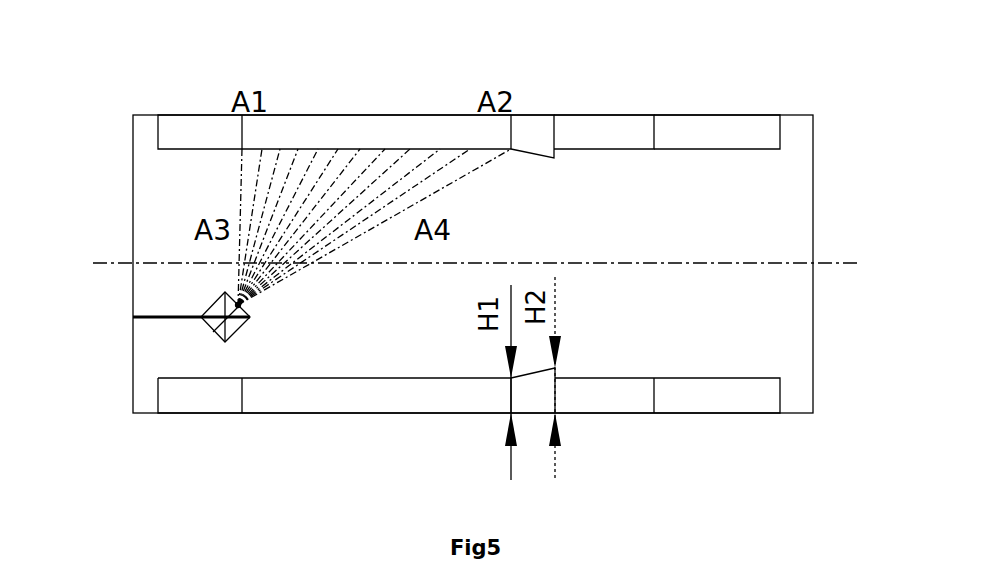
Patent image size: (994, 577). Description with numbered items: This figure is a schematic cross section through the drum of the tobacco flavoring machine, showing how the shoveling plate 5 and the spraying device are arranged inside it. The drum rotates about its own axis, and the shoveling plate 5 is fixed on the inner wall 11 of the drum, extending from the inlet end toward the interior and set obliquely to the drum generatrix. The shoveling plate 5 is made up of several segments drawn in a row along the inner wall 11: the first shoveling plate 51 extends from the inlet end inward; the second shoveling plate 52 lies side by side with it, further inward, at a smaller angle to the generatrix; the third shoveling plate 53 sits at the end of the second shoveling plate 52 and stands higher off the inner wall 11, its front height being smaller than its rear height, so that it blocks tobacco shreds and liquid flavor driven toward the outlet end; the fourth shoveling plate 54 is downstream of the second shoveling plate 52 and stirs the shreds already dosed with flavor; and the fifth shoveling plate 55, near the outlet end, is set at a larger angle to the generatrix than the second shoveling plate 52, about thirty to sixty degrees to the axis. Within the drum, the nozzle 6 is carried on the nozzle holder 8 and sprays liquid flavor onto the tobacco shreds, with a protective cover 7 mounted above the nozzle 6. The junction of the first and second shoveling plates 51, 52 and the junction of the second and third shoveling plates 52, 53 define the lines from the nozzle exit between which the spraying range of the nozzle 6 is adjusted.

The shoveling plate 5 is at (520, 362).
The nozzle 6 is at (312, 396).
The protective cover 7 is at (211, 390).
The nozzle holder 8 is at (144, 401).
The inner wall 11 is at (520, 264).
The first shoveling plate 51 is at (219, 74).
The second shoveling plate 52 is at (376, 74).
The third shoveling plate 53 is at (571, 79).
The fourth shoveling plate 54 is at (639, 74).
The fifth shoveling plate 55 is at (734, 74).